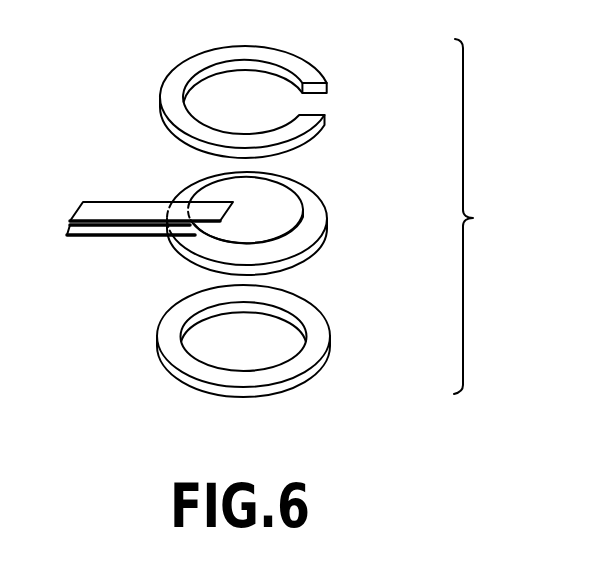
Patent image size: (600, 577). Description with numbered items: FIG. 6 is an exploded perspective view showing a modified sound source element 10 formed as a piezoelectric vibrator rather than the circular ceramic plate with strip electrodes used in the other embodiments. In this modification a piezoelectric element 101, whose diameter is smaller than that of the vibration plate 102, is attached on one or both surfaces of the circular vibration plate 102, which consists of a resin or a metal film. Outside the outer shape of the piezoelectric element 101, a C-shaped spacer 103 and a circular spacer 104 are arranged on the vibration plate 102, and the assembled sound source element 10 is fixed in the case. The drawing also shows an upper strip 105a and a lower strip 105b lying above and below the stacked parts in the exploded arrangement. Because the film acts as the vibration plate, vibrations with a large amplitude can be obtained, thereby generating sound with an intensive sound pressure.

The sound source element 10 is at (482, 216).
The piezoelectric element 101 is at (278, 200).
The vibration plate 102 is at (313, 233).
The C-shaped spacer 103 is at (295, 64).
The circular spacer 104 is at (315, 340).
The upper strip 105a is at (123, 215).
The lower strip 105b is at (98, 226).